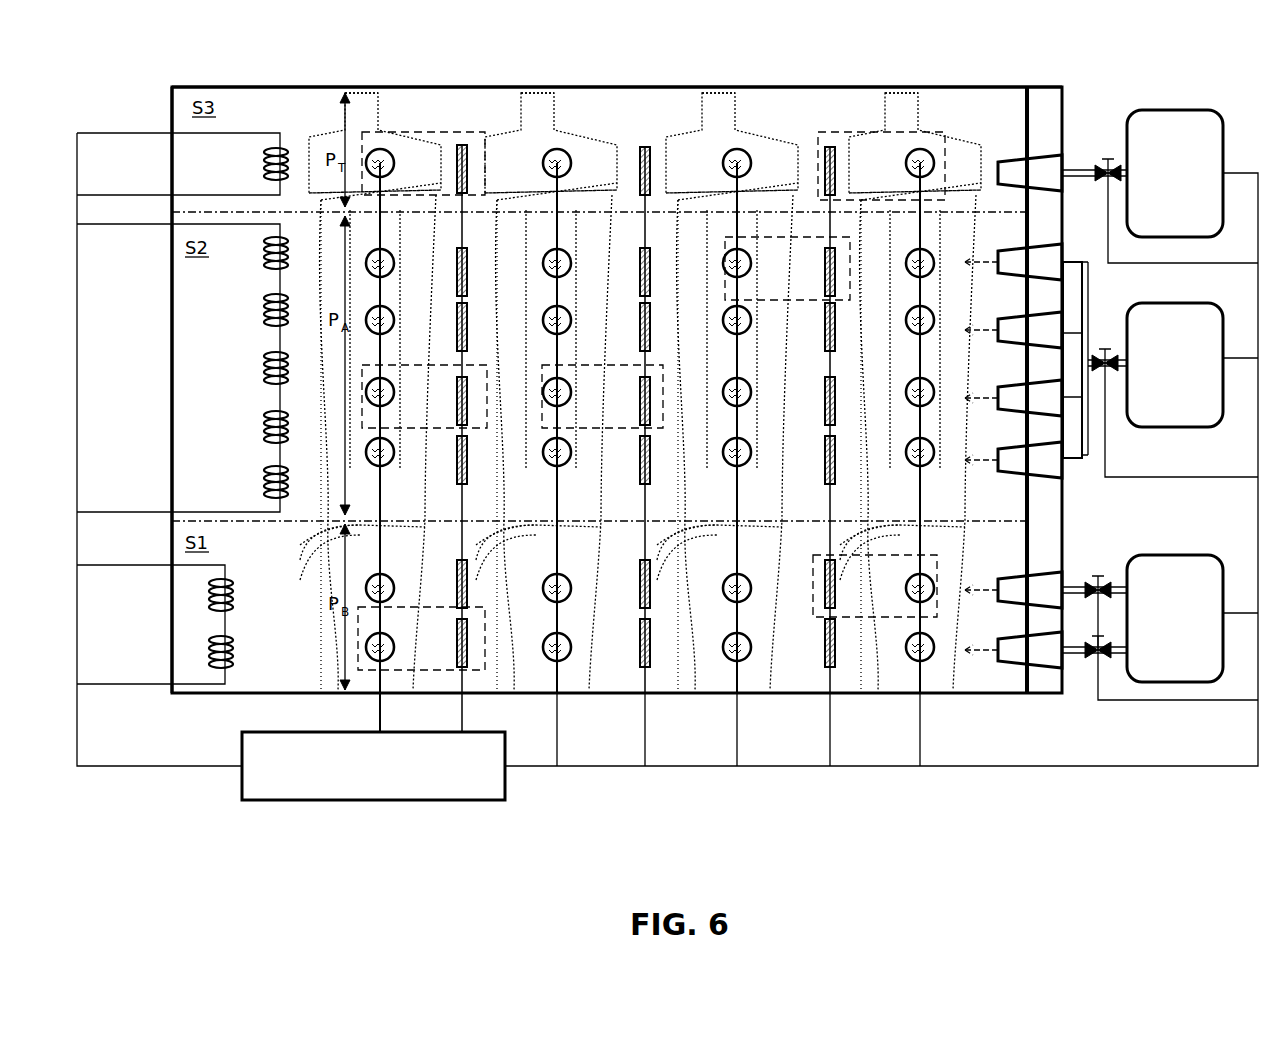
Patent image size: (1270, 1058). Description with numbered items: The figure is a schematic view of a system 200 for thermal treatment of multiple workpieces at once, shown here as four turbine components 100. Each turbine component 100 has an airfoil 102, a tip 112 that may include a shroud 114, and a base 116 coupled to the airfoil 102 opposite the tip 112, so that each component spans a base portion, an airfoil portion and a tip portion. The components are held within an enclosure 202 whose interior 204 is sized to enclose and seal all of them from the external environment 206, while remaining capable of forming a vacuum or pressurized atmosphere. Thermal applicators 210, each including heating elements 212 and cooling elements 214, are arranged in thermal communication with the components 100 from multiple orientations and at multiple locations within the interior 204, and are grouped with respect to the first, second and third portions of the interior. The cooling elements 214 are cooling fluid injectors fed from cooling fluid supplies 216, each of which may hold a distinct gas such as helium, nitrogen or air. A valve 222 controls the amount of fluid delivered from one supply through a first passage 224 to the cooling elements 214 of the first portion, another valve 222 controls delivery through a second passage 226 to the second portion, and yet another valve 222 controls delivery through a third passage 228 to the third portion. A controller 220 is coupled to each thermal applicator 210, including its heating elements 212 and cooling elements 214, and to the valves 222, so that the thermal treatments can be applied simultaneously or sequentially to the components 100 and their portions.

The turbine component 100 is at (398, 118).
The airfoil 102 is at (430, 295).
The tip 112 is at (432, 166).
The shroud 114 is at (365, 118).
The base 116 is at (430, 581).
The system 200 is at (1080, 92).
The enclosure 202 is at (172, 400).
The interior 204 is at (270, 108).
The external environment 206 is at (157, 65).
The thermal applicator 210 is at (425, 130).
The heating element 212 is at (264, 160).
The cooling element 214 is at (386, 178).
The cooling fluid supply 216 is at (1190, 181).
The controller 220 is at (390, 774).
The valve 222 is at (1108, 165).
The first passage 224 is at (1072, 655).
The second passage 226 is at (1087, 440).
The third passage 228 is at (1075, 180).